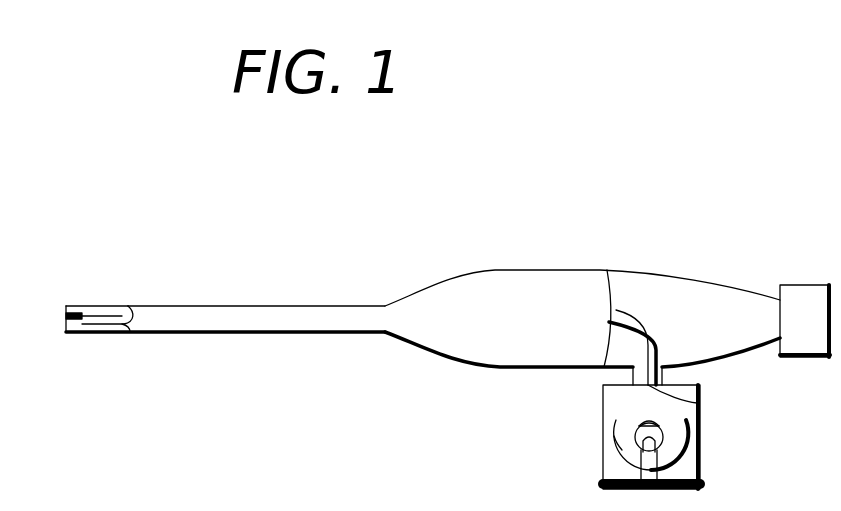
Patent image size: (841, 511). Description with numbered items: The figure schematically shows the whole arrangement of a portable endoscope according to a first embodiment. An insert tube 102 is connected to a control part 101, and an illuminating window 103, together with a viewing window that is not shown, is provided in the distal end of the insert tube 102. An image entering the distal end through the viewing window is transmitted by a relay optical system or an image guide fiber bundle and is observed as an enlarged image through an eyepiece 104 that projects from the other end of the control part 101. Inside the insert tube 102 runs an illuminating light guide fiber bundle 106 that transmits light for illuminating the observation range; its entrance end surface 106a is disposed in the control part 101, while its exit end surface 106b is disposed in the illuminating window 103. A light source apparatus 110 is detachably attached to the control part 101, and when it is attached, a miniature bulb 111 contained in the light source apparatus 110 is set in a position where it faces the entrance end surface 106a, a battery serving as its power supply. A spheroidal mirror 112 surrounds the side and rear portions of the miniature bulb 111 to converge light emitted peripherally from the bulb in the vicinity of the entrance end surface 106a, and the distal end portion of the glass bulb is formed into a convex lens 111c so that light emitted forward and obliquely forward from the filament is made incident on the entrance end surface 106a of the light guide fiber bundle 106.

The control part 101 is at (488, 272).
The insert tube 102 is at (273, 305).
The illuminating window 103 is at (64, 321).
The eyepiece 104 is at (805, 285).
The illuminating light guide fiber bundle 106 is at (107, 318).
The entrance end surface 106a is at (697, 403).
The exit end surface 106b is at (68, 316).
The light source apparatus 110 is at (604, 462).
The miniature bulb 111 is at (666, 438).
The convex lens 111c is at (643, 424).
The spheroidal mirror 112 is at (613, 435).